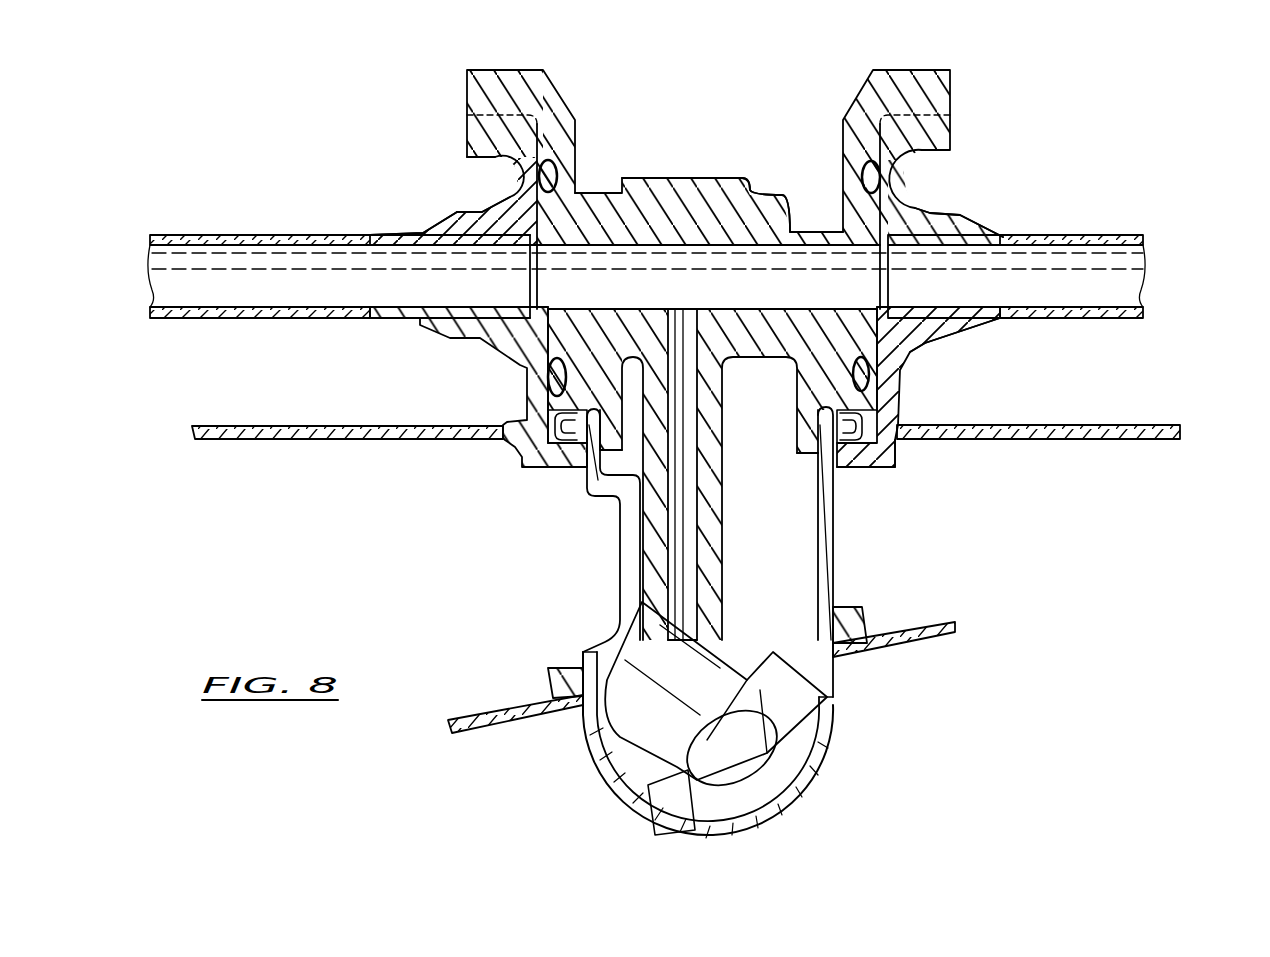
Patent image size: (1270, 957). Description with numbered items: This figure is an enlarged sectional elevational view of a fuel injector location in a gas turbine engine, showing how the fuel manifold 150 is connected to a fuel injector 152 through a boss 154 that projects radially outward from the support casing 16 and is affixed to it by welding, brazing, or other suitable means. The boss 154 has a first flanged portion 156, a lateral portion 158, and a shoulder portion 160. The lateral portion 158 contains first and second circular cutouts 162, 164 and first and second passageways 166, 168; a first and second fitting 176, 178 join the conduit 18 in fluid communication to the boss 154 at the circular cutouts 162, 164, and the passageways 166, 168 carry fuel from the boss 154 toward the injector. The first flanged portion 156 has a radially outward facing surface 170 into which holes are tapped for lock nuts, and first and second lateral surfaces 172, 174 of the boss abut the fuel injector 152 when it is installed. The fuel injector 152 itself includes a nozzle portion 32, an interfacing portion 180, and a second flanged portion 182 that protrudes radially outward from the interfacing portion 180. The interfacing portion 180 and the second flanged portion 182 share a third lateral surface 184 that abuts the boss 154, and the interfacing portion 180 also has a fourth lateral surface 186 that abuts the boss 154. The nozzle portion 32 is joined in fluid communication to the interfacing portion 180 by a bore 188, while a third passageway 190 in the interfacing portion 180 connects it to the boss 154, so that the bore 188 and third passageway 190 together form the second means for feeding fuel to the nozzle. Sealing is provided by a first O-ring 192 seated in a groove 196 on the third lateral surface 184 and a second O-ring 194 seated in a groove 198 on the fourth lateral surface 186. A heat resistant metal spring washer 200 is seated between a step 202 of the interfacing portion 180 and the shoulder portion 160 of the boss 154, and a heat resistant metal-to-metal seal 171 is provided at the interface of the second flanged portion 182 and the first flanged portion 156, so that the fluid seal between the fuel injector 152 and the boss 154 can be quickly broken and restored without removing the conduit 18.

The support casing 16 is at (230, 442).
The conduit 18 is at (195, 235).
The nozzle portion 32 is at (725, 568).
The fuel manifold 150 is at (1130, 212).
The fuel injector 152 is at (702, 88).
The boss 154 is at (935, 372).
The first flanged portion 156 is at (470, 162).
The lateral portion 158 is at (925, 345).
The shoulder portion 160 is at (890, 455).
The first circular cutout 162 is at (445, 338).
The second circular cutout 164 is at (960, 222).
The first passageway 166 is at (530, 288).
The second passageway 168 is at (890, 286).
The radially outward facing surface 170 is at (488, 108).
The heat resistant metal-to-metal seal 171 is at (945, 112).
The first lateral surface 172 is at (828, 200).
The second lateral surface 174 is at (895, 410).
The first fitting 176 is at (440, 228).
The second fitting 178 is at (985, 232).
The interfacing portion 180 is at (748, 322).
The second flanged portion 182 is at (685, 178).
The third lateral surface 184 is at (497, 208).
The fourth lateral surface 186 is at (545, 348).
The bore 188 is at (702, 515).
The third passageway 190 is at (752, 300).
The first O-ring 192 is at (905, 182).
The second O-ring 194 is at (872, 385).
The groove 196 is at (554, 170).
The groove 198 is at (546, 374).
The heat resistant metal spring washer 200 is at (805, 428).
The step 202 is at (560, 405).